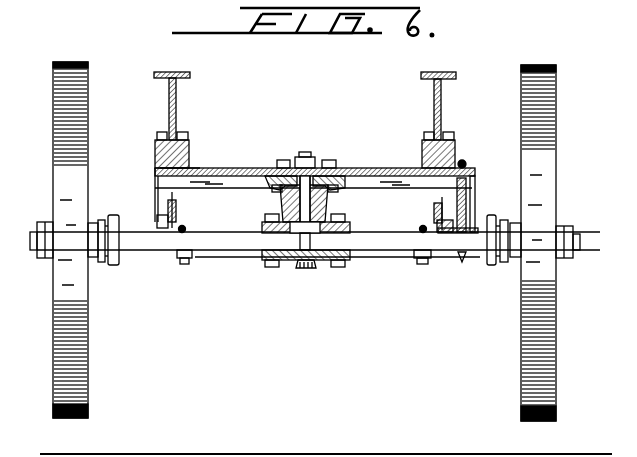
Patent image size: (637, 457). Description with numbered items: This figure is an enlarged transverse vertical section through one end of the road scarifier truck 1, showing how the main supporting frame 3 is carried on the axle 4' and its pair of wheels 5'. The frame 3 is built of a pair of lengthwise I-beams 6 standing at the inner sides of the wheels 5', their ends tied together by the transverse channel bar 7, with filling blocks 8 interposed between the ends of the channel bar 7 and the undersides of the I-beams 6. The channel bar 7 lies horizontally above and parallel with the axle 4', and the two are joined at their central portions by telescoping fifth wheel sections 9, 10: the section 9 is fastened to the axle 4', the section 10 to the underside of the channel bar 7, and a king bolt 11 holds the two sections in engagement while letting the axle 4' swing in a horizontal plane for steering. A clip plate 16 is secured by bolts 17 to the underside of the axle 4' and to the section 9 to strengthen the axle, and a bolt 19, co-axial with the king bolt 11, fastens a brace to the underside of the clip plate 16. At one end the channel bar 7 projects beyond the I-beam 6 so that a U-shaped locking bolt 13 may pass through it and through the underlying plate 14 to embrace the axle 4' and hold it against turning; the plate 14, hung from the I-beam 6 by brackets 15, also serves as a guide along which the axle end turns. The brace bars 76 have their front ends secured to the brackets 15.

The truck 1 is at (532, 80).
The main supporting frame 3 is at (177, 124).
The axle 4' is at (315, 253).
The wheels 5' is at (301, 241).
The I-beams 6 is at (169, 89).
The channel bar 7 is at (398, 168).
The filling blocks 8 is at (160, 157).
The fifth wheel section 9 is at (328, 207).
The fifth wheel section 10 is at (270, 188).
The king bolt 11 is at (318, 172).
The locking bolt 13 is at (468, 203).
The plate 14 is at (453, 233).
The brackets 15 is at (186, 195).
The clip plates 16 is at (320, 263).
The bolts 17 is at (272, 263).
The bolts 19 is at (310, 265).
The brace bars 76 is at (181, 233).